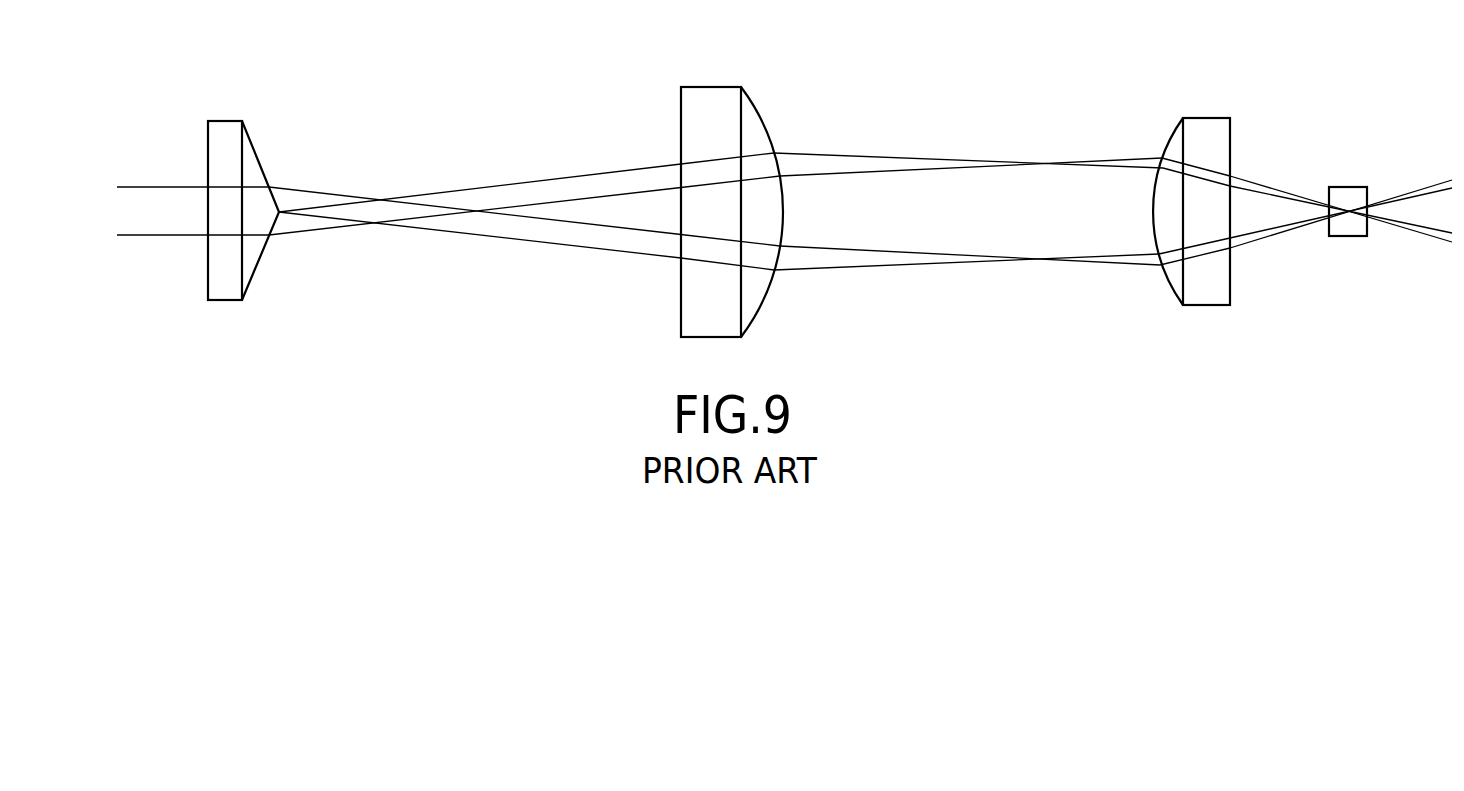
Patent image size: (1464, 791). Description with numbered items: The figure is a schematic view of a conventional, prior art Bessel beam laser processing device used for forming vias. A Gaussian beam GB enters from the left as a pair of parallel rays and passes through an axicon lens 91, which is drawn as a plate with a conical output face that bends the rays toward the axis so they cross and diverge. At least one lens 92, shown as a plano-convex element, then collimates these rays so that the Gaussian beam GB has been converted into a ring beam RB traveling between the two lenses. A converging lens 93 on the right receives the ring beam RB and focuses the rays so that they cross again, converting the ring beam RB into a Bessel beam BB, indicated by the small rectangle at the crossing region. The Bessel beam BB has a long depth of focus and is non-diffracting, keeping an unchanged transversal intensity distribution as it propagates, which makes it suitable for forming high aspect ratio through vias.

The axicon lens 91 is at (227, 121).
The lens 92 is at (712, 87).
The converging lens 93 is at (1208, 118).
The Gaussian beam GB is at (185, 187).
The ring beam RB is at (905, 155).
The Bessel beam BB is at (1344, 208).